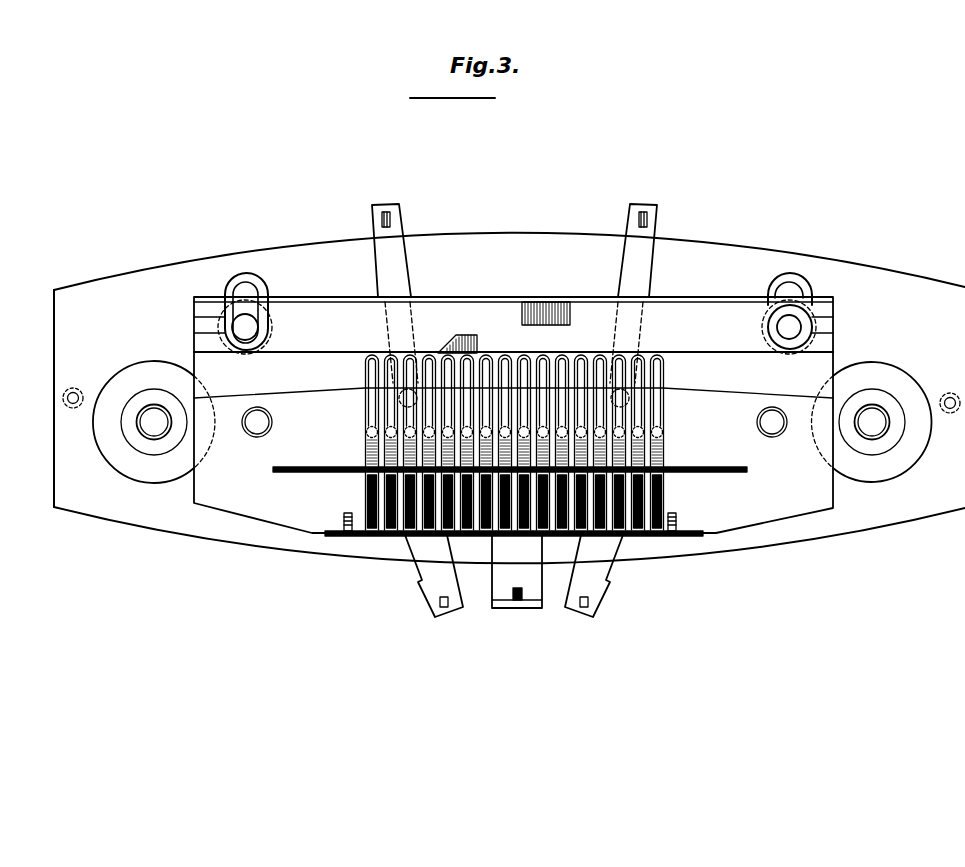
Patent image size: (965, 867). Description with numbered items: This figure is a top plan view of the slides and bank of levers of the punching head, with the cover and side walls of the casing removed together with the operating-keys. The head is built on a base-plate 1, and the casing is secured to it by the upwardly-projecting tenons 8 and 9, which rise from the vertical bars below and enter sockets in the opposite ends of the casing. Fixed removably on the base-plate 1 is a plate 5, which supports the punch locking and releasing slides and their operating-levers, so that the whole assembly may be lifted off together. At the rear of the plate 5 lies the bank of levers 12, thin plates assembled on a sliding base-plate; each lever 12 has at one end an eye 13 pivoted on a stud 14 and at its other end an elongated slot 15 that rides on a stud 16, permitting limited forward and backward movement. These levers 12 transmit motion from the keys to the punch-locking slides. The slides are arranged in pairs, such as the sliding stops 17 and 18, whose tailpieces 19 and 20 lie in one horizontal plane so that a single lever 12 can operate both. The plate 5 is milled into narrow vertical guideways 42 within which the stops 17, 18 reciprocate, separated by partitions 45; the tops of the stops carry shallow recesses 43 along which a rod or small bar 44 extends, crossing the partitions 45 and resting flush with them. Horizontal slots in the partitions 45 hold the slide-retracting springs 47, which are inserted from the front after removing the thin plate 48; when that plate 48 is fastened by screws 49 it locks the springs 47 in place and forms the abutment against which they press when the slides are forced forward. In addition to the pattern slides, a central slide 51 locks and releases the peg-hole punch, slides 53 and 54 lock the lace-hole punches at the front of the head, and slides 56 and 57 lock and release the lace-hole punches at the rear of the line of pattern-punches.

The base-plate 1 is at (509, 398).
The plate 5 is at (513, 442).
The tenon 8 is at (137, 437).
The tenon 9 is at (888, 437).
The lever 12 is at (513, 324).
The eye 13 is at (778, 345).
The stud 14 is at (789, 327).
The elongated slot 15 is at (258, 282).
The stud 16 is at (245, 327).
The sliding stop 17 is at (515, 420).
The sliding stop 18 is at (540, 405).
The tailpiece 19 is at (520, 360).
The tailpiece 20 is at (547, 365).
The vertical guideway 42 is at (665, 398).
The shallow recess 43 is at (665, 440).
The rod or small bar 44 is at (355, 467).
The partition 45 is at (660, 496).
The slide-retracting spring 47 is at (660, 523).
The thin plate 48 is at (648, 535).
The screw 49 is at (344, 533).
The central slide 51 is at (515, 610).
The slide 53 is at (436, 620).
The slide 54 is at (587, 620).
The slide 56 is at (395, 230).
The slide 57 is at (655, 228).